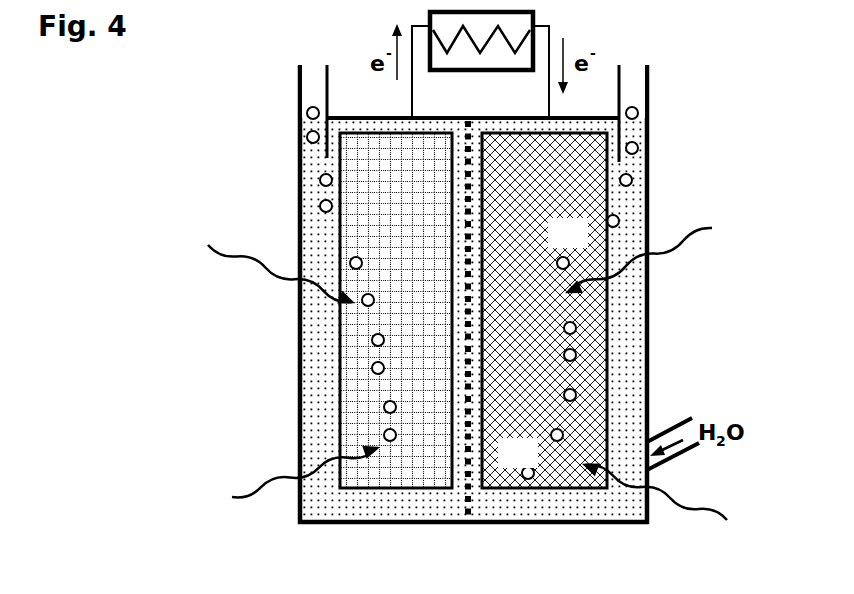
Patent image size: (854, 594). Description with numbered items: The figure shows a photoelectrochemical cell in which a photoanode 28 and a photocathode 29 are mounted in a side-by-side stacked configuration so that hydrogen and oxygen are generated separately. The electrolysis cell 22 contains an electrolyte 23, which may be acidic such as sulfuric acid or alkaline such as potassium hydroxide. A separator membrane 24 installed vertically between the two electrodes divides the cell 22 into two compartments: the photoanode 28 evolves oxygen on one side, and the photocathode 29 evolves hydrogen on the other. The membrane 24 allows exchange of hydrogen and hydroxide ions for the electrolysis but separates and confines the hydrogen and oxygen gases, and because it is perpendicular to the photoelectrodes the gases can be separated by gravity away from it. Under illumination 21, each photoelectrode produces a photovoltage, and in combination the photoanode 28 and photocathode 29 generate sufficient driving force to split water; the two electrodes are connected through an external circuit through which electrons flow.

The illumination 21 is at (670, 243).
The electrolysis cell 22 is at (300, 204).
The electrolyte 23 is at (626, 314).
The separator membrane 24 is at (466, 522).
The photoanode 28 is at (365, 370).
The photocathode 29 is at (605, 375).